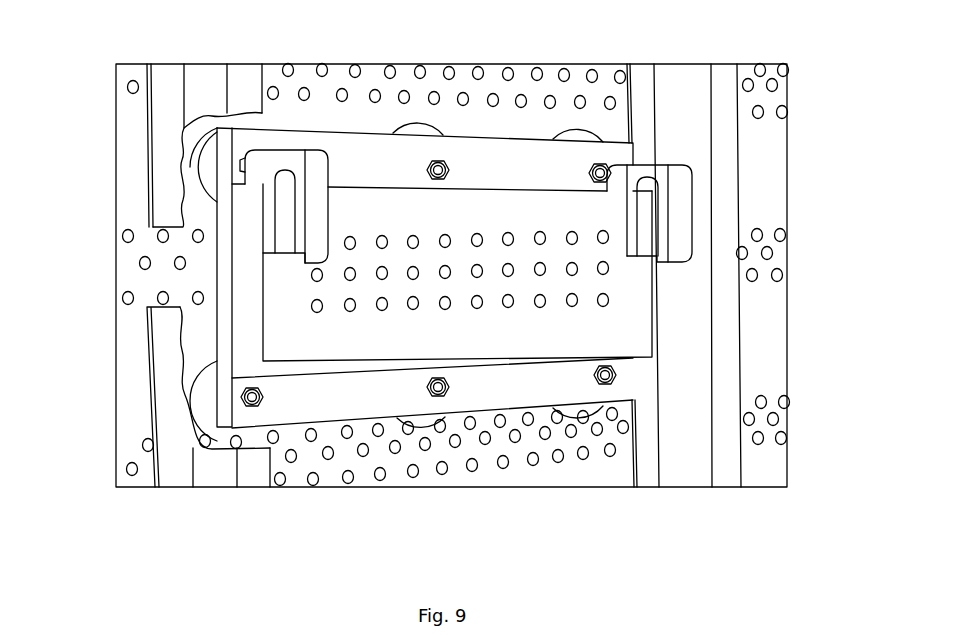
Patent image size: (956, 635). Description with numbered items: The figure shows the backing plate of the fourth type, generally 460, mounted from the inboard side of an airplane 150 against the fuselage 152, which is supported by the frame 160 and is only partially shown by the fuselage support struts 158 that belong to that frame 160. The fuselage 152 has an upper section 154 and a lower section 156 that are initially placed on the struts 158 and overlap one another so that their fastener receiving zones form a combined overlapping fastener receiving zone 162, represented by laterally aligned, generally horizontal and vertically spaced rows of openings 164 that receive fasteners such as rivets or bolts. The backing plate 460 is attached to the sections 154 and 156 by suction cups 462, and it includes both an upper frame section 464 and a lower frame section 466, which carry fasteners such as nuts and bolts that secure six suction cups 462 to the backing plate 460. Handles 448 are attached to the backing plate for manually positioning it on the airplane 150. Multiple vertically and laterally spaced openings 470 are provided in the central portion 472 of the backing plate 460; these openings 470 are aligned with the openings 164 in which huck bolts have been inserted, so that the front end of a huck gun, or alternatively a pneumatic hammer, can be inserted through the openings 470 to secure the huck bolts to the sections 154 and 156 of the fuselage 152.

The airplane 150 is at (339, 60).
The fuselage 152 is at (788, 97).
The upper section 154 is at (788, 166).
The lower section 156 is at (788, 324).
The fuselage support struts 158 is at (177, 487).
The frame 160 is at (681, 64).
The combined overlapping fastener receiving zone 162 is at (134, 250).
The openings 164 is at (538, 69).
The handles 448 is at (285, 250).
The backing plate Type 4 460 is at (236, 294).
The suction cups 462 is at (198, 167).
The upper frame section 464 is at (394, 171).
The lower frame section 466 is at (532, 399).
The openings 470 is at (384, 236).
The central portion 472 is at (457, 276).